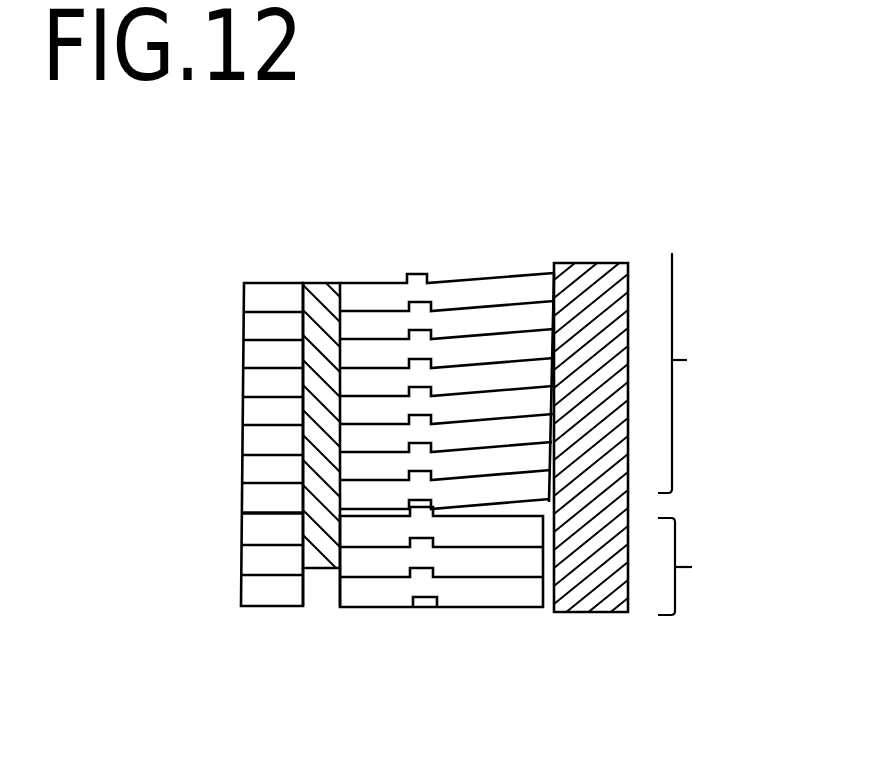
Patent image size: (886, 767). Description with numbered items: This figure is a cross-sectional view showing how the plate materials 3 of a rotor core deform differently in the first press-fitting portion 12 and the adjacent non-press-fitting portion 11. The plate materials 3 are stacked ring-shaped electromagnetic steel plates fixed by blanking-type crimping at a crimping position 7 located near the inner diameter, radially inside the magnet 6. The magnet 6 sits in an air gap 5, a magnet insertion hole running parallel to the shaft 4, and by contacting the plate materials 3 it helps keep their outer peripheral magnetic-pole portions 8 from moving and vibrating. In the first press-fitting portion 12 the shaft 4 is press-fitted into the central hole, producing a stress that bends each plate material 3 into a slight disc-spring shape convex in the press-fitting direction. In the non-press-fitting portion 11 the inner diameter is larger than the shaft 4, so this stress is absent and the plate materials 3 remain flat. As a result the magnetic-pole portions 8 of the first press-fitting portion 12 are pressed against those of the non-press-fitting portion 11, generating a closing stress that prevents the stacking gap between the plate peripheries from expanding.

The plate material 3 is at (477, 276).
The shaft 4 is at (584, 264).
The air gap 5 is at (322, 593).
The magnet 6 is at (313, 283).
The crimping position 7 is at (427, 603).
The magnetic-pole portion 8 is at (253, 283).
The non-press-fitting portion 11 is at (714, 566).
The first press-fitting portion 12 is at (714, 373).